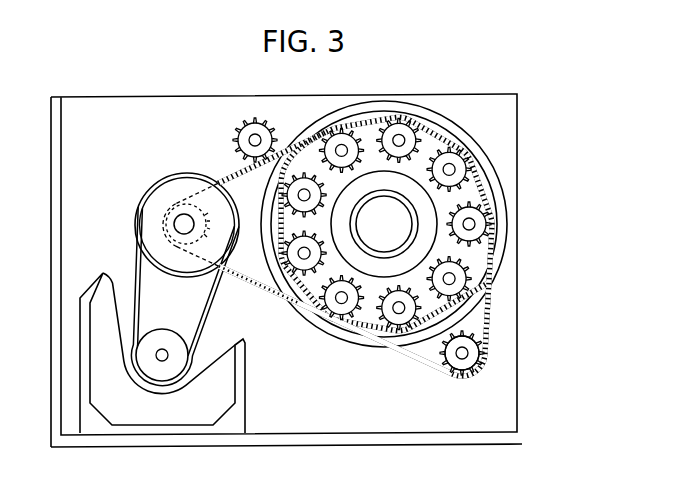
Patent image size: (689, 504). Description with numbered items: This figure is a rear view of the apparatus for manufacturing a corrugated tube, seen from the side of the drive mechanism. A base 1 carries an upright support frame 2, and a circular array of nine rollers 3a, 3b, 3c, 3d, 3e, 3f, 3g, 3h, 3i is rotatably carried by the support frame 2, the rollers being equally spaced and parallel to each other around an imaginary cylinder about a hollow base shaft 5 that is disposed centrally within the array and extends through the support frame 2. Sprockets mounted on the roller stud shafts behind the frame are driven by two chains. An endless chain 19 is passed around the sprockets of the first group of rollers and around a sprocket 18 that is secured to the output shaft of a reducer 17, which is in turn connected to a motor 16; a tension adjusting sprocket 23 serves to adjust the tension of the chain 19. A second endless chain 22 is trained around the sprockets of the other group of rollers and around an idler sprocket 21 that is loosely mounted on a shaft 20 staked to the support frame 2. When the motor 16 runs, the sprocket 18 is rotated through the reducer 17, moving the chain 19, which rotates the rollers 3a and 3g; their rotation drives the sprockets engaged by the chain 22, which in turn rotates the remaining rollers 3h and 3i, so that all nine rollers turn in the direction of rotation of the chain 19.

The base 1 is at (520, 438).
The upright support frame 2 is at (105, 96).
The roller 3a is at (342, 147).
The roller 3b is at (399, 139).
The roller 3c is at (455, 163).
The roller 3d is at (477, 225).
The roller 3e is at (472, 292).
The roller 3f is at (388, 328).
The roller 3g is at (339, 320).
The roller 3h is at (282, 283).
The roller 3i is at (300, 195).
The hollow base shaft 5 is at (391, 234).
The motor 16 is at (234, 398).
The reducer 17 is at (132, 191).
The sprocket 18 is at (182, 196).
The endless chain 19 is at (247, 282).
The shaft 20 is at (463, 362).
The idler sprocket 21 is at (452, 362).
The second endless chain 22 is at (489, 330).
The tension adjusting sprocket 23 is at (254, 117).